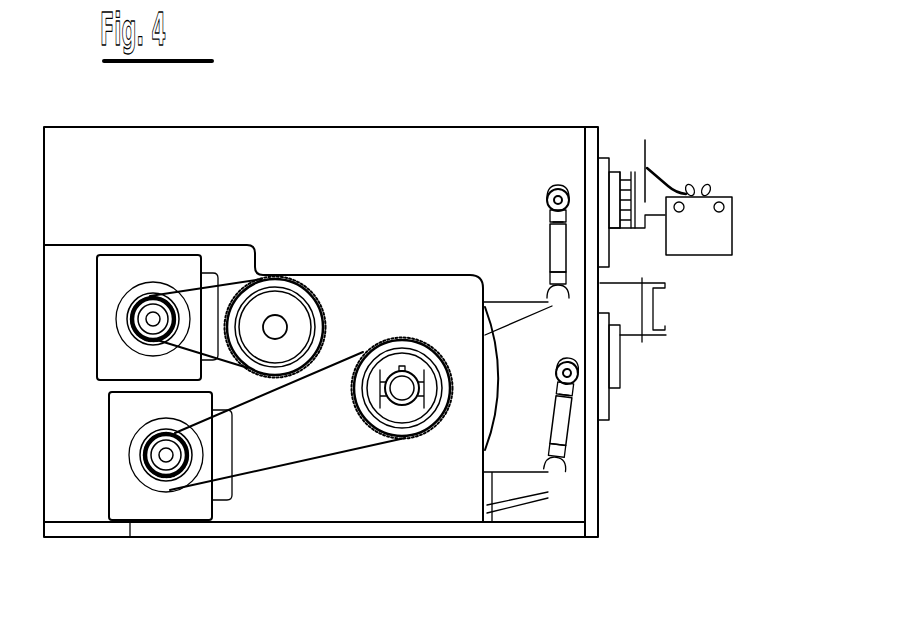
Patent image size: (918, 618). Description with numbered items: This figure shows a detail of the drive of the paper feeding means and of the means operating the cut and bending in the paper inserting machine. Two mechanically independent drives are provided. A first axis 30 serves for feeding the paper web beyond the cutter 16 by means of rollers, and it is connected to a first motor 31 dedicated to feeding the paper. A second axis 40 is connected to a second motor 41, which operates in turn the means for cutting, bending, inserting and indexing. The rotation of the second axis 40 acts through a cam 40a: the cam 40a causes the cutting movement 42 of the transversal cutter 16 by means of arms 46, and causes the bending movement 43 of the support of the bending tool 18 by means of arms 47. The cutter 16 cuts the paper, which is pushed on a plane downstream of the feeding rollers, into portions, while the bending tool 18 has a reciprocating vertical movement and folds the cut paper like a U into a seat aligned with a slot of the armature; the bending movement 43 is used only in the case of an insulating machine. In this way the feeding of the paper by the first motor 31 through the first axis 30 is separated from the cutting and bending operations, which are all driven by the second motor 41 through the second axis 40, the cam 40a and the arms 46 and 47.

The transversal cutter 16 is at (666, 337).
The bending tool 18 is at (686, 192).
The first axis 30 is at (276, 320).
The first motor 31 is at (148, 305).
The second axis 40 is at (400, 393).
The cam 40a is at (495, 420).
The second motor 41 is at (168, 478).
The cutting movement 42 is at (642, 311).
The bending movement 43 is at (645, 167).
The arms 46 is at (552, 498).
The arms 47 is at (515, 305).